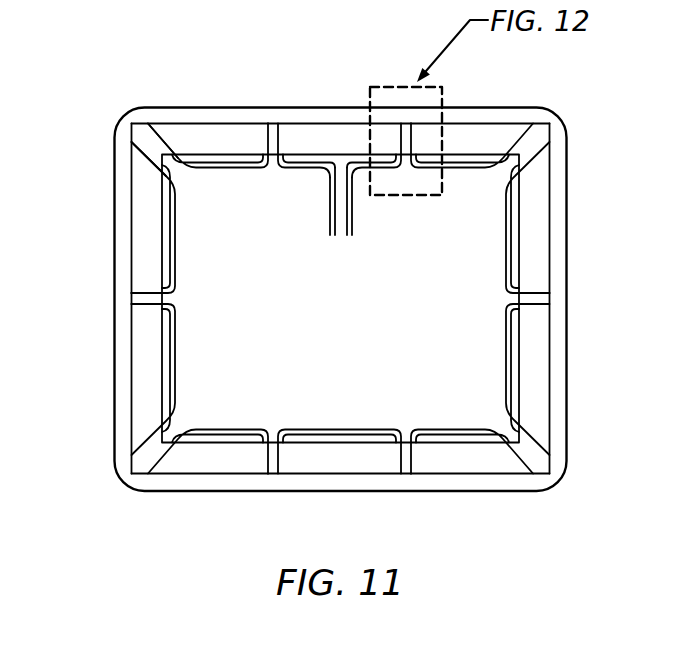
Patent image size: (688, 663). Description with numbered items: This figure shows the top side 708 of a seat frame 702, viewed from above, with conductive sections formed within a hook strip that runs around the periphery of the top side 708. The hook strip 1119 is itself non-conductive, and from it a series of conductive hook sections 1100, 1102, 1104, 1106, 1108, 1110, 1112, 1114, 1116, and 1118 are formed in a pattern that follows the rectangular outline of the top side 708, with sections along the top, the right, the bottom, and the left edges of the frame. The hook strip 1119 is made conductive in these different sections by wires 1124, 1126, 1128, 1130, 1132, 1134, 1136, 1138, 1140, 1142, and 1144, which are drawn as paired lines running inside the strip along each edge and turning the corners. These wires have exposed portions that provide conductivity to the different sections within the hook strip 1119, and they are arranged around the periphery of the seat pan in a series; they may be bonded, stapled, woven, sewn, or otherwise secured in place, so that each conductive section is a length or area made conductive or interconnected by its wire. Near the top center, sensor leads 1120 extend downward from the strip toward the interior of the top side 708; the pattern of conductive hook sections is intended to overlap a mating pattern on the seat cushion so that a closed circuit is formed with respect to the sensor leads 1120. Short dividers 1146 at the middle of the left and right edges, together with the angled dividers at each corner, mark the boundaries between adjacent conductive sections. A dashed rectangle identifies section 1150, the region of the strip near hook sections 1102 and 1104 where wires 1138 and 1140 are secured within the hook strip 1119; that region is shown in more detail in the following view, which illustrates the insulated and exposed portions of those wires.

The seat frame 702 is at (569, 283).
The top side 708 is at (321, 343).
The conductive hook section 1100 is at (225, 116).
The conductive hook section 1102 is at (327, 116).
The conductive hook section 1104 is at (483, 108).
The conductive hook section 1106 is at (550, 172).
The conductive hook section 1108 is at (550, 372).
The conductive hook section 1110 is at (482, 477).
The conductive hook section 1112 is at (345, 477).
The conductive hook section 1114 is at (200, 477).
The conductive hook section 1116 is at (130, 370).
The conductive hook section 1118 is at (130, 173).
The non-conductive hook strip 1119 is at (170, 137).
The sensor leads 1120 is at (331, 237).
The wire 1124 is at (218, 170).
The wire 1126 is at (178, 331).
The wire 1128 is at (225, 425).
The wire 1130 is at (343, 425).
The wire 1132 is at (455, 425).
The wire 1134 is at (503, 331).
The wire 1136 is at (503, 252).
The wire 1138 is at (458, 173).
The wire 1140 is at (378, 172).
The wire 1142 is at (299, 172).
The wire 1144 is at (178, 254).
The side divider 1146 is at (131, 281).
The section 1150 is at (393, 80).